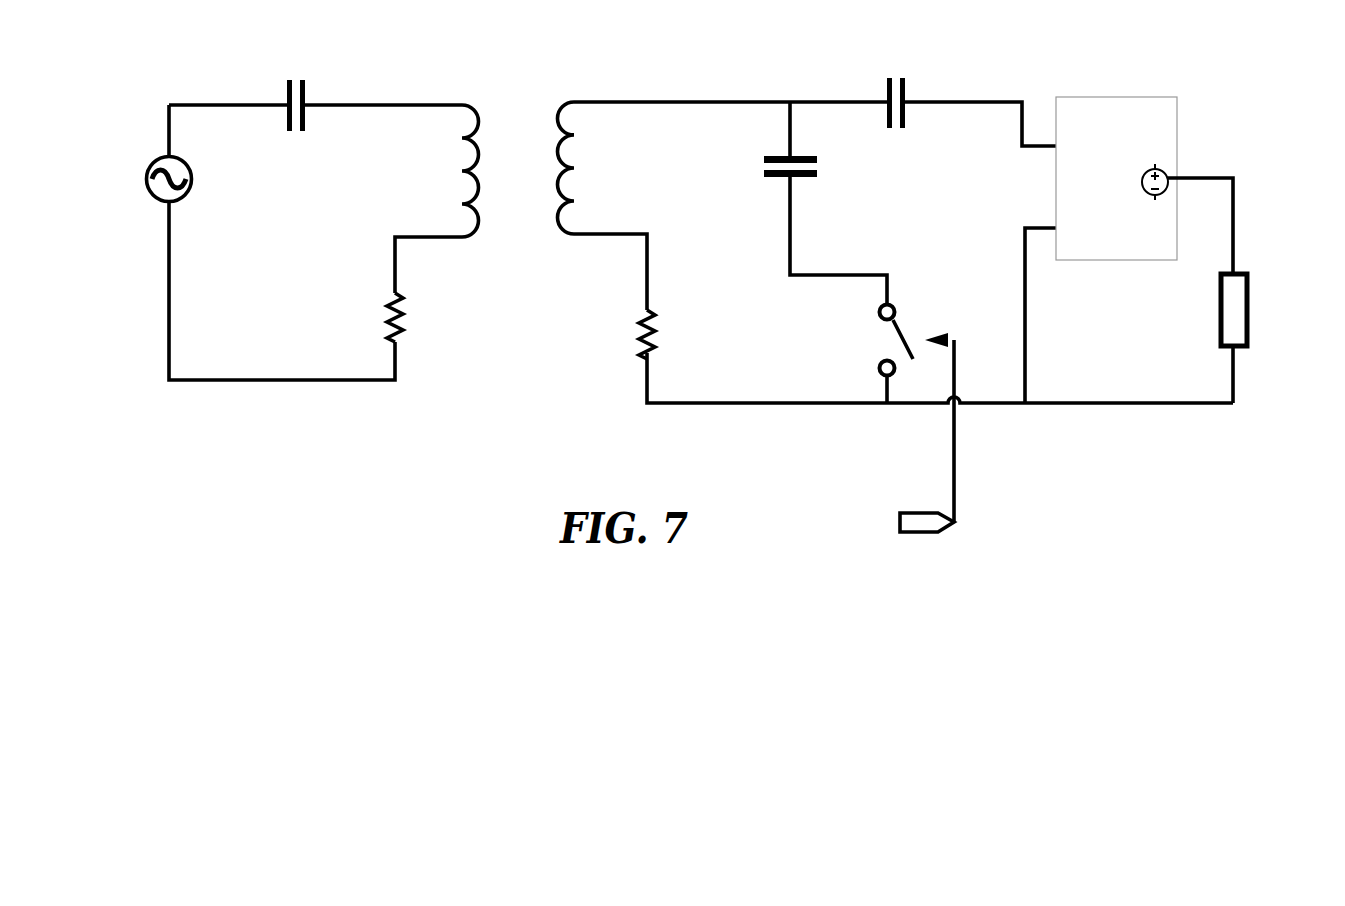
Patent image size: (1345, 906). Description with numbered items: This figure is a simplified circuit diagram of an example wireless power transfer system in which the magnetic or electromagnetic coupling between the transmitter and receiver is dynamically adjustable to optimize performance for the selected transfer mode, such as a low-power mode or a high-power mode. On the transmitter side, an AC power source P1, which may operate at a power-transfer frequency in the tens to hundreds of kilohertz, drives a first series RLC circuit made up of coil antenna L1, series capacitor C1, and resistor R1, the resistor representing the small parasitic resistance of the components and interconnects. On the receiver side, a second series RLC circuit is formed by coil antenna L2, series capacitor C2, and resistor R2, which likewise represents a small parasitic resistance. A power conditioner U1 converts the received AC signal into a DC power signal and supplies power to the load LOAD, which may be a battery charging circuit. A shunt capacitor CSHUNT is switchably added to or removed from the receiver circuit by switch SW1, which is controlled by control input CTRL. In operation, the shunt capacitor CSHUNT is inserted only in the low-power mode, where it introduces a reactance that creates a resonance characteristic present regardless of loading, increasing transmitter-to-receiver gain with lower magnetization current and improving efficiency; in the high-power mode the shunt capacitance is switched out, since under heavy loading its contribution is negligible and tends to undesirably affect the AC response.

The AC power source P1 is at (152, 179).
The series capacitor C1 is at (297, 84).
The coil antenna L1 is at (452, 171).
The resistor R1 is at (416, 317).
The coil antenna L2 is at (584, 168).
The resistor R2 is at (629, 334).
The shunt capacitor CSHUNT is at (786, 202).
The series capacitor C2 is at (897, 126).
The switch SW1 is at (869, 354).
The control input CTRL is at (916, 456).
The power conditioner U1 is at (1144, 200).
The load LOAD is at (1271, 338).